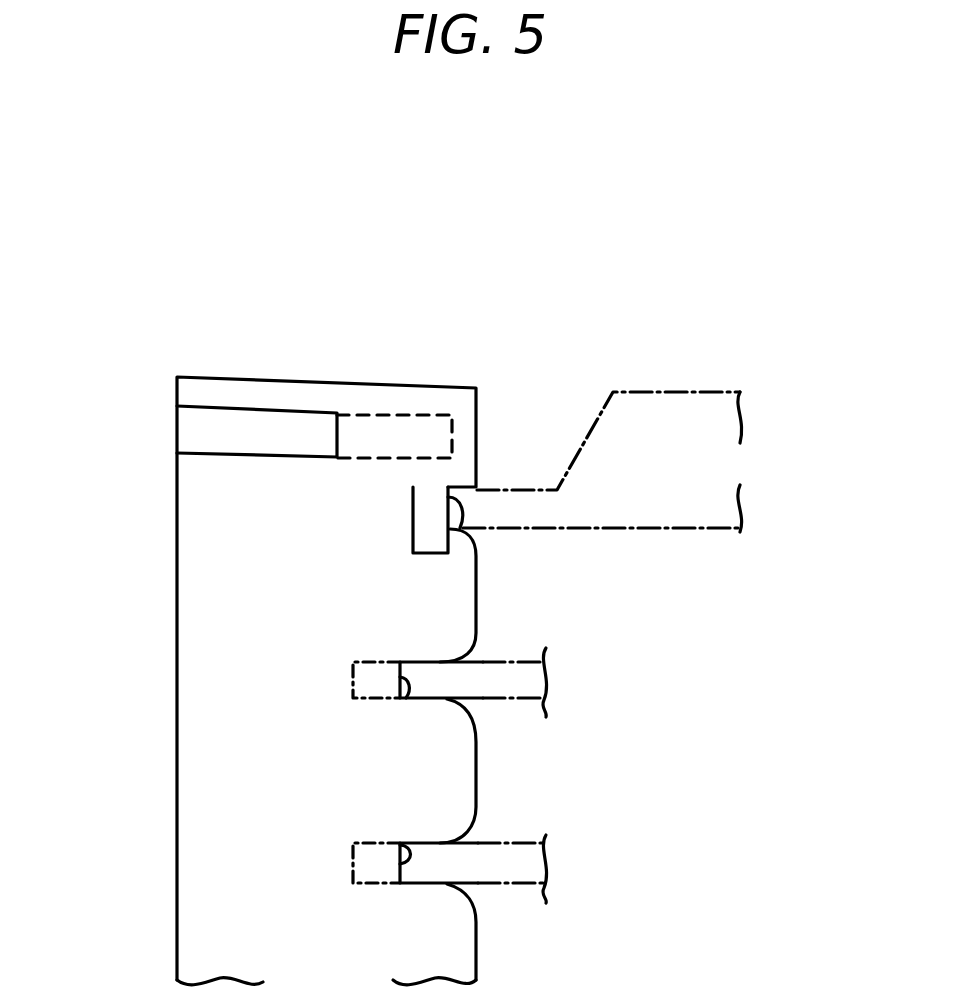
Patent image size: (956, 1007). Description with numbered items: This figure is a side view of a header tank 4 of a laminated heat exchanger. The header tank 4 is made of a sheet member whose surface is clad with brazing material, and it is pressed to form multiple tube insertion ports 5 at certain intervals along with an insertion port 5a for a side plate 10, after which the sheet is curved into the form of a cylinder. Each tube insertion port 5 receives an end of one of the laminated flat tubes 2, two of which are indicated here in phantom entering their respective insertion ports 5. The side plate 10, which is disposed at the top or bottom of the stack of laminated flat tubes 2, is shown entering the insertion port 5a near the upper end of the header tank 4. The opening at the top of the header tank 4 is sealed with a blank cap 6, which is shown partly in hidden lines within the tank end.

The flat tube 2 is at (480, 660).
The header tank 4 is at (193, 779).
The tube insertion port 5 is at (407, 703).
The insertion port for side plate 5a is at (447, 540).
The blank cap 6 is at (264, 432).
The side plate 10 is at (687, 408).